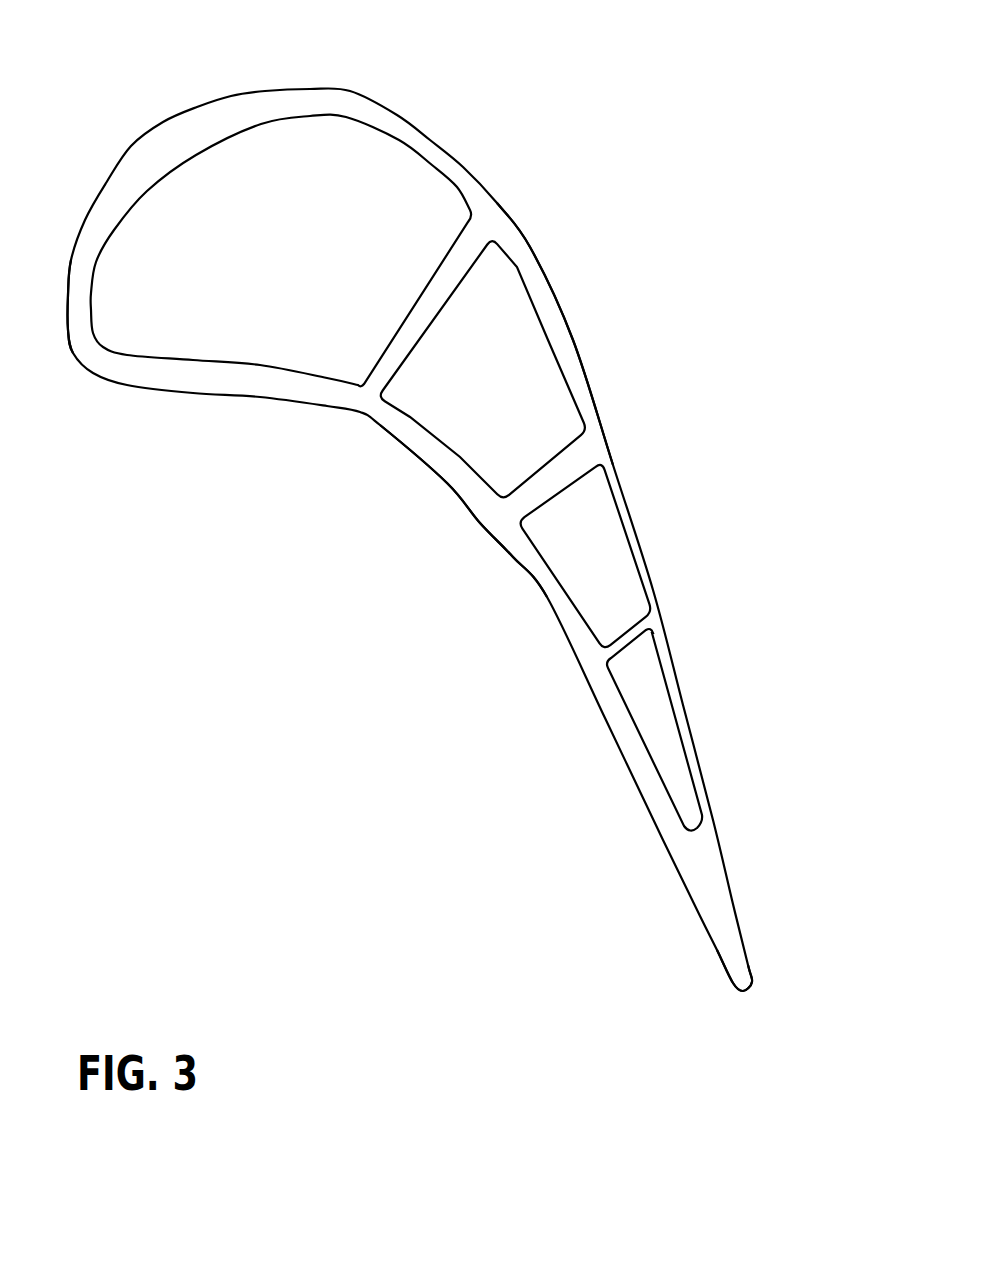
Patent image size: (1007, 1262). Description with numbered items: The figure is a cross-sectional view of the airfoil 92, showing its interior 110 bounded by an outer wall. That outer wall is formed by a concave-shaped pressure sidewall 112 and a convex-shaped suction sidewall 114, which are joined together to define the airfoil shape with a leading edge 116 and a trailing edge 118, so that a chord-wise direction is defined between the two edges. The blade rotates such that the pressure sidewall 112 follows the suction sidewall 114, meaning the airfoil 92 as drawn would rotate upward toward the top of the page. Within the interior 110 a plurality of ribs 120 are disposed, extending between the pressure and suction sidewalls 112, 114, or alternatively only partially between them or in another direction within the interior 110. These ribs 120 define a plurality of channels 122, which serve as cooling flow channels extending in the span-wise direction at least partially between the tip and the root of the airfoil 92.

The airfoil 92 is at (123, 142).
The interior 110 is at (280, 163).
The pressure sidewall 112 is at (402, 442).
The suction sidewall 114 is at (515, 225).
The leading edge 116 is at (73, 350).
The trailing edge 118 is at (743, 990).
The ribs 120 is at (428, 309).
The channels 122 is at (305, 258).